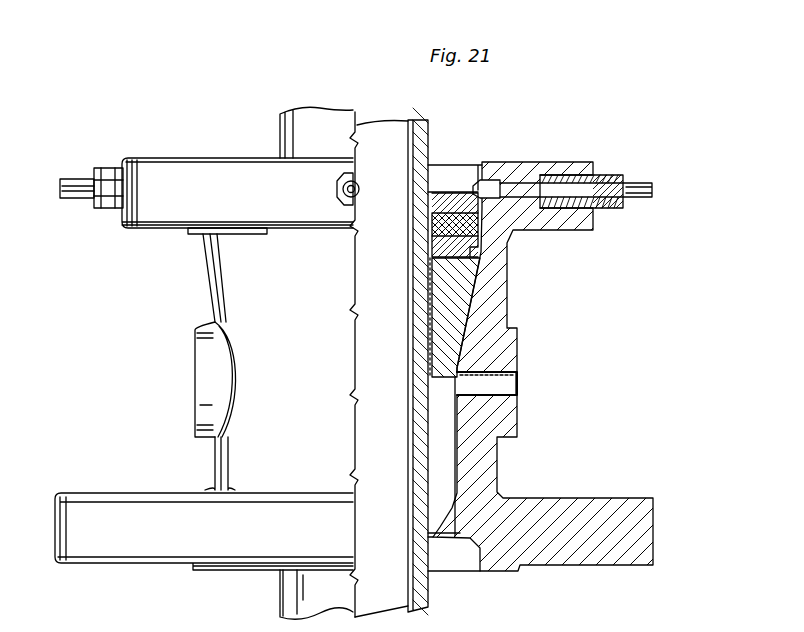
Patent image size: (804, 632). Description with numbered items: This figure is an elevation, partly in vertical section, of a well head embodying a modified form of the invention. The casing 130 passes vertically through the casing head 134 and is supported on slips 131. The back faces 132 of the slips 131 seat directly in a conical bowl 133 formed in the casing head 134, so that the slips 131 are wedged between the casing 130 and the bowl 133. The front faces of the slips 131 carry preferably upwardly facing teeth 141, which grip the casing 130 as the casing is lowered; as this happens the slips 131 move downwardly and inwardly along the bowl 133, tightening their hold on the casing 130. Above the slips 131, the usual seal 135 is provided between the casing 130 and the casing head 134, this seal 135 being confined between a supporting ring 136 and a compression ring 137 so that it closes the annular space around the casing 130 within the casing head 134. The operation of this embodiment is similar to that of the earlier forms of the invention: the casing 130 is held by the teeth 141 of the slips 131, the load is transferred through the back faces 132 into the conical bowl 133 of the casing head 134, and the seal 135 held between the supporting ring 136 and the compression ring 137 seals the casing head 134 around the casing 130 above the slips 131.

The casing 130 is at (427, 595).
The slips 131 is at (450, 282).
The back faces 132 is at (457, 374).
The conical bowl 133 is at (470, 293).
The casing head 134 is at (484, 349).
The seal 135 is at (430, 227).
The supporting ring 136 is at (481, 243).
The compression ring 137 is at (448, 191).
The teeth 141 is at (430, 318).